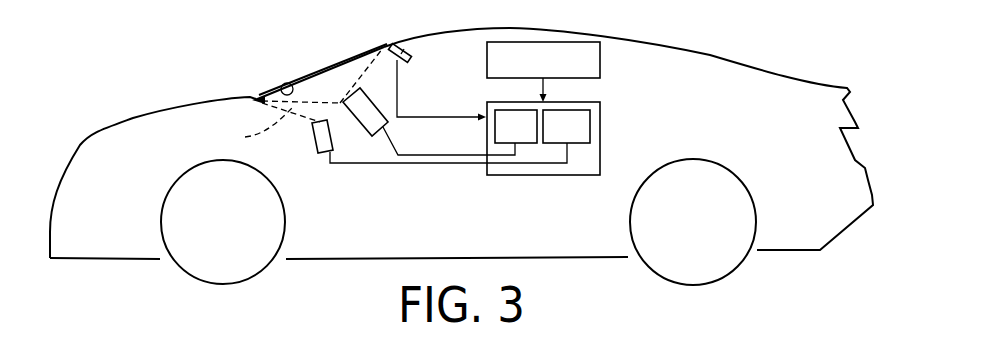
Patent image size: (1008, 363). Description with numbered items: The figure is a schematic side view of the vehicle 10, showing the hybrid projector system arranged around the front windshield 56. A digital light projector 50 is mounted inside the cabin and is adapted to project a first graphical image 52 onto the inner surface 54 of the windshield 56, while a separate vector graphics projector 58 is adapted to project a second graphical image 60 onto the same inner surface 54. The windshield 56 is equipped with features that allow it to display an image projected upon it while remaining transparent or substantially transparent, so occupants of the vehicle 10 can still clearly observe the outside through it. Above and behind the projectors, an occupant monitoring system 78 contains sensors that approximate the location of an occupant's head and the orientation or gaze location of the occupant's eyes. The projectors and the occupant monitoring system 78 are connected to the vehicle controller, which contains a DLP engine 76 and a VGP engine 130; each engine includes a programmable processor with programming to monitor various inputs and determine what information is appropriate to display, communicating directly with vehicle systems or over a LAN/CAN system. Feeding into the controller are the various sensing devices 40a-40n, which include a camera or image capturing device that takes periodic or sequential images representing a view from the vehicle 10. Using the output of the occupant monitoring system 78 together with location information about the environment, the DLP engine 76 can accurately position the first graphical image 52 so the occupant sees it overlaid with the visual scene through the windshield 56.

The vehicle 10 is at (660, 45).
The digital light projector 50 is at (372, 122).
The first graphical image 52 is at (361, 91).
The inner surface 54 is at (291, 81).
The windshield 56 is at (307, 70).
The vector graphics projector 58 is at (317, 138).
The second graphical image 60 is at (254, 130).
The DLP engine 76 is at (532, 138).
The occupant monitoring system 78 is at (408, 52).
The VGP engine 130 is at (588, 138).
The sensing devices 40a-40n is at (588, 71).